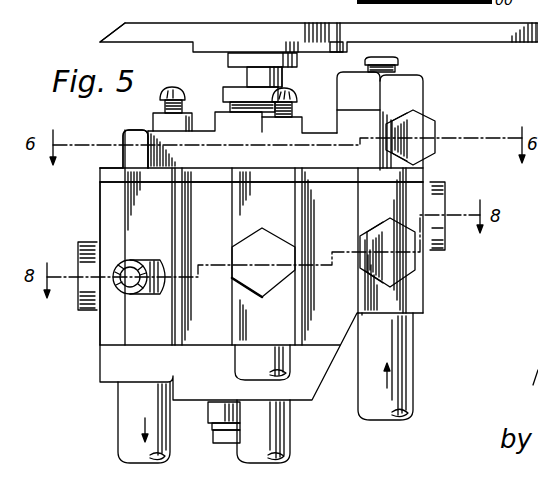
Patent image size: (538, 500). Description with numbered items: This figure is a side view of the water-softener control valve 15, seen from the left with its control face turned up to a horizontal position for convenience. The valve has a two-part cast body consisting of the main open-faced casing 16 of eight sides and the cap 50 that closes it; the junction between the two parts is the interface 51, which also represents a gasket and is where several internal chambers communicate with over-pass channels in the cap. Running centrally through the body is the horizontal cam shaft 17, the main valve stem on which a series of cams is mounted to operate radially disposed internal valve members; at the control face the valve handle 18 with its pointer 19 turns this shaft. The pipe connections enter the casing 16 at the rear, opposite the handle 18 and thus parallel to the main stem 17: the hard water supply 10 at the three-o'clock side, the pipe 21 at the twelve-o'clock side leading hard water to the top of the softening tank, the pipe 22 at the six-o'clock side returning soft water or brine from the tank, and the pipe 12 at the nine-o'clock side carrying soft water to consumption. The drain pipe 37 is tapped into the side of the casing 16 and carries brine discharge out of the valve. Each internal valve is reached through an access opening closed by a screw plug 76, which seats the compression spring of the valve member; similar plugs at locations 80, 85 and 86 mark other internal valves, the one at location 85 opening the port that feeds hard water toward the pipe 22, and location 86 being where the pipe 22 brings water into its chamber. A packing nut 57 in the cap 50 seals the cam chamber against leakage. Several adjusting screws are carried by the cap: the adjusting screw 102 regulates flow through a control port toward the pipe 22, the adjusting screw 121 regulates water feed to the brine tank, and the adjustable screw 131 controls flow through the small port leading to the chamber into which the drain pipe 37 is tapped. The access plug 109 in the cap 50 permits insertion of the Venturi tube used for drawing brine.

The hard water supply 10 is at (404, 357).
The pipe 12 is at (118, 418).
The valve 15 is at (100, 205).
The casing 16 is at (102, 226).
The cam shaft 17 is at (247, 75).
The valve handle 18 is at (292, 33).
The pointer 19 is at (121, 25).
The pipe 21 is at (290, 436).
The pipe 22 is at (282, 360).
The drain pipe 37 is at (131, 294).
The cap 50 is at (135, 130).
The interface 51 is at (113, 180).
The packing nut 57 is at (283, 90).
The screw plug 76 is at (228, 437).
The closure plug location 80 is at (82, 300).
The closure plug location 85 is at (400, 268).
The closure plug location 86 is at (250, 290).
The adjusting screw 102 is at (297, 95).
The access plug 109 is at (427, 125).
The adjusting screw 121 is at (400, 62).
The adjustable screw 131 is at (170, 90).